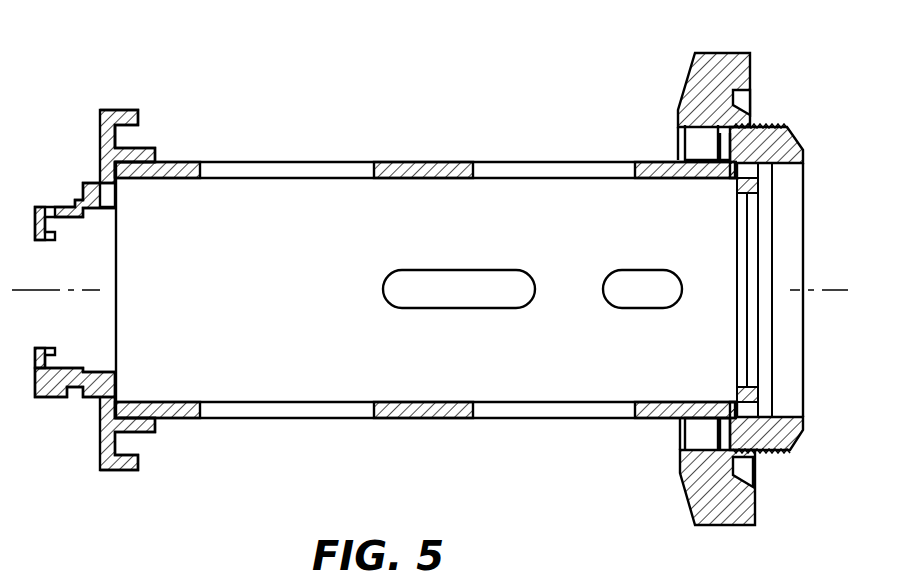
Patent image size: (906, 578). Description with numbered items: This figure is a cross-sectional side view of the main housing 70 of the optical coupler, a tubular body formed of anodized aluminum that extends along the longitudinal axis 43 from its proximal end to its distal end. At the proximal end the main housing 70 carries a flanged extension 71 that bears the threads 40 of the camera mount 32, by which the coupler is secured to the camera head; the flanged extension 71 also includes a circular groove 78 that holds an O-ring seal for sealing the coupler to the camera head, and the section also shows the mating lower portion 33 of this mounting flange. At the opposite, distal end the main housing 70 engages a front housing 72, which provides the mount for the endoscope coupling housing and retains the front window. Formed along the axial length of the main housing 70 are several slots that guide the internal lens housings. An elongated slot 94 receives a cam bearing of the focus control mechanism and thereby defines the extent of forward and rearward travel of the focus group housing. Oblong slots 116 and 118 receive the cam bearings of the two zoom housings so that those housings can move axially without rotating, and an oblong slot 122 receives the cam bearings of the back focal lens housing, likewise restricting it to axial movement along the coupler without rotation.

The camera mount 32 is at (762, 47).
The lower flange block 33 is at (755, 508).
The threads 40 is at (770, 452).
The longitudinal axis 43 is at (80, 292).
The main housing 70 is at (440, 156).
The flanged extension 71 is at (800, 150).
The front housing 72 is at (137, 113).
The circular groove 78 is at (752, 100).
The elongated slot 94 is at (292, 162).
The oblong slot 116 is at (458, 283).
The oblong slot 118 is at (562, 180).
The oblong slot 122 is at (653, 302).